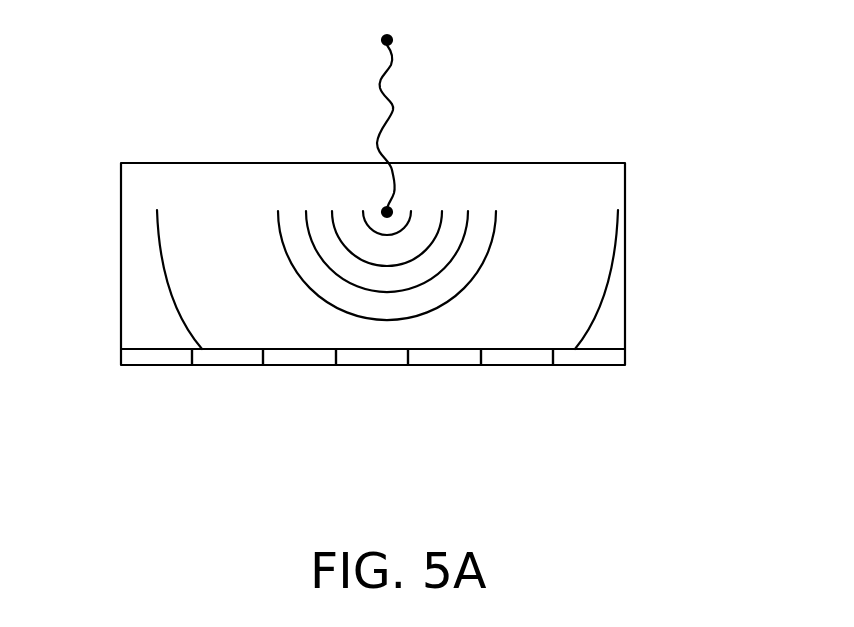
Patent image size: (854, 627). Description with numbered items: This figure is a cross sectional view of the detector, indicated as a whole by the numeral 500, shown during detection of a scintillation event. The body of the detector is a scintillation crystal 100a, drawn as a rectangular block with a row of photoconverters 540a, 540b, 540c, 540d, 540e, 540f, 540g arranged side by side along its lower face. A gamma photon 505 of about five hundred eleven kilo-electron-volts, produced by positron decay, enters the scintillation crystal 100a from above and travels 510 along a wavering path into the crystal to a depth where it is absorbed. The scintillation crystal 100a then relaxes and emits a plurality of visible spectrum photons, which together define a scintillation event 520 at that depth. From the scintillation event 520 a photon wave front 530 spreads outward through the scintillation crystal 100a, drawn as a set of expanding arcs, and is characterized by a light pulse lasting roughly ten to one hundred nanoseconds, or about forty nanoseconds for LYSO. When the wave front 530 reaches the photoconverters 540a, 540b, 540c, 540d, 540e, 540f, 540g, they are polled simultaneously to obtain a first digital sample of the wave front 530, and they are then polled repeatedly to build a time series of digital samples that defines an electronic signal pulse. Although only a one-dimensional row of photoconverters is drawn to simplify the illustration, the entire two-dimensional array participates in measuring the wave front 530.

The sensor system 500 is at (371, 236).
The scintillation crystal 100a is at (138, 257).
The gamma photon 505 is at (391, 36).
The travel of the gamma photon 510 is at (392, 108).
The scintillation event 520 is at (392, 211).
The photon wave front 530 is at (612, 270).
The photoconverter 540a is at (162, 358).
The photoconverter 540b is at (237, 358).
The photoconverter 540c is at (308, 358).
The photoconverter 540d is at (377, 358).
The photoconverter 540e is at (448, 358).
The photoconverter 540f is at (522, 358).
The photoconverter 540g is at (585, 358).